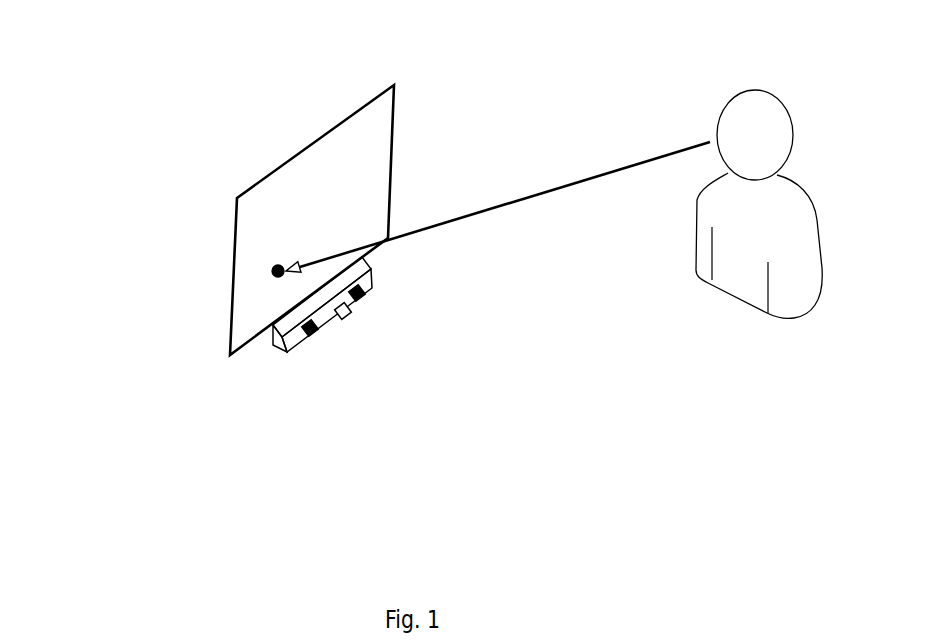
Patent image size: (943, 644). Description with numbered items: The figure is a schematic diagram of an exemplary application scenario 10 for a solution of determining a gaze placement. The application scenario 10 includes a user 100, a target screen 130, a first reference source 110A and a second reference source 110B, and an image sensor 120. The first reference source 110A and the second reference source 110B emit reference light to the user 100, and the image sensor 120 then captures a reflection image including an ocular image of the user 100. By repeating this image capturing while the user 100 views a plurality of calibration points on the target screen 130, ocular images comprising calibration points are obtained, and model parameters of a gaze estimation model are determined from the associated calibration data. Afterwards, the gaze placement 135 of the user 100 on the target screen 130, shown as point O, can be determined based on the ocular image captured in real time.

The application scenario 10 is at (540, 43).
The user 100 is at (778, 398).
The first reference source 110A is at (374, 298).
The second reference source 110B is at (309, 337).
The image sensor 120 is at (350, 319).
The target screen 130 is at (327, 162).
The gaze placement 135 is at (263, 272).